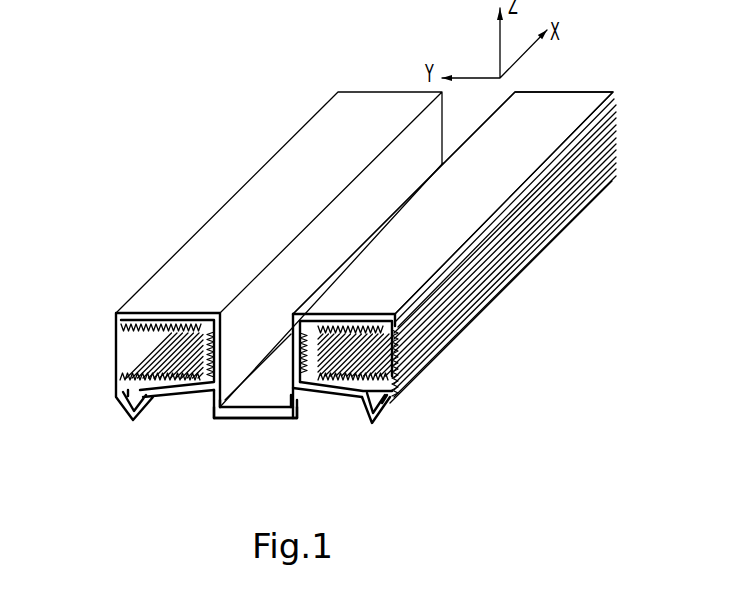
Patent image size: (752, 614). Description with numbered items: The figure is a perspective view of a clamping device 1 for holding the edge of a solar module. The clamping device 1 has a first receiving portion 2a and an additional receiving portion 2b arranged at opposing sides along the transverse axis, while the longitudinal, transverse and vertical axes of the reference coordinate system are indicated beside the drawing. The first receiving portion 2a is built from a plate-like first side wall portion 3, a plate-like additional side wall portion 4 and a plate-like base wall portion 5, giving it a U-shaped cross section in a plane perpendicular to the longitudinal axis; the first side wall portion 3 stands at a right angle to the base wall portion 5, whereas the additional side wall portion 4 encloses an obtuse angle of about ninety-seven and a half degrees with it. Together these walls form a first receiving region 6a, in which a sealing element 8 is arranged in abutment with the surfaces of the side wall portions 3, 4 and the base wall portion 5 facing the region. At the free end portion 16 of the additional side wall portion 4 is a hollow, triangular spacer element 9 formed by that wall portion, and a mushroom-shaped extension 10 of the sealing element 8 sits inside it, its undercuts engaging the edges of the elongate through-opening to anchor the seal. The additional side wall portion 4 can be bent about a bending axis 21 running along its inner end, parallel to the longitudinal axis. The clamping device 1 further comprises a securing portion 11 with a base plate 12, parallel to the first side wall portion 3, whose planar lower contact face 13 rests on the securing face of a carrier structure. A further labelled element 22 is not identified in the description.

The clamping device 1 is at (130, 480).
The first receiving portion 2a is at (617, 132).
The additional receiving portion 2b is at (105, 351).
The first side wall portion 3 is at (517, 133).
The additional side wall portion 4 is at (338, 393).
The base wall portion 5 is at (263, 398).
The first receiving region 6a is at (607, 150).
The sealing element 8 is at (312, 373).
The spacer element 9 is at (371, 418).
The extension 10 is at (390, 408).
The securing portion 11 is at (220, 475).
The base plate 12 is at (226, 405).
The contact face 13 is at (248, 402).
The free end portion 16 is at (392, 398).
The bending axis 21 is at (283, 400).
The right side wall 22 is at (297, 396).